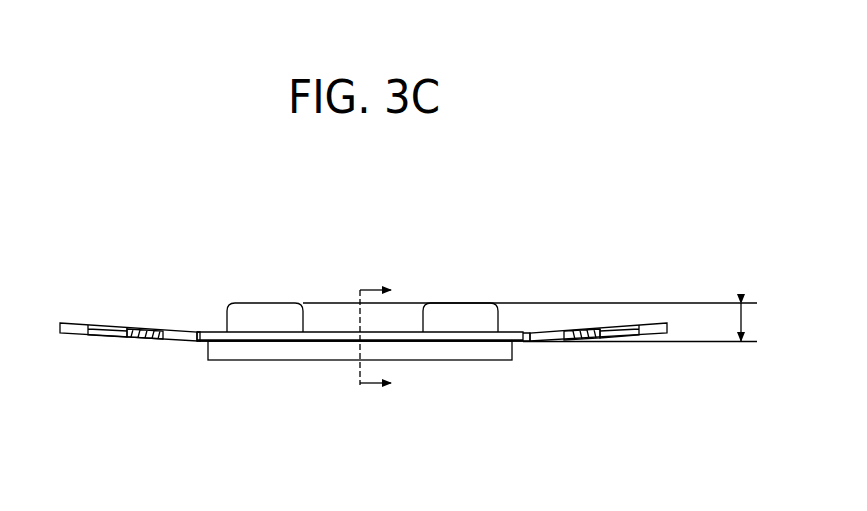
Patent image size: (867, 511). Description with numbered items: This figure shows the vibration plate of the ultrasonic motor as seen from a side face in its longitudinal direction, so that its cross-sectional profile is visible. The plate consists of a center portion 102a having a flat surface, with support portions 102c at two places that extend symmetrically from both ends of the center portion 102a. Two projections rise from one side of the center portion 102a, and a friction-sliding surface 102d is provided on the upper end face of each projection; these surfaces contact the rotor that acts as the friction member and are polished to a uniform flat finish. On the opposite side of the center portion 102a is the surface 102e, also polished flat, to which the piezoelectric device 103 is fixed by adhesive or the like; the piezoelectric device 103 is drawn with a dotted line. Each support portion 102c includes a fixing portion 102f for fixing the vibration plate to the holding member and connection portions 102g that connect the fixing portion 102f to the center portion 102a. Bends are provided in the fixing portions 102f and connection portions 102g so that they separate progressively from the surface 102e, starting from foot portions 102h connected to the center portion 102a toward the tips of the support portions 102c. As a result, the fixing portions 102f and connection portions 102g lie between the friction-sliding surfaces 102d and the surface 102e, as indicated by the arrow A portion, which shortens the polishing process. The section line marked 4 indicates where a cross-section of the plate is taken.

The center portion 102a is at (320, 332).
The support portion 102c is at (187, 258).
The friction-sliding surface 102d is at (258, 302).
The surface 102e is at (416, 342).
The fixing portion 102f is at (98, 325).
The connection portion 102g is at (165, 332).
The foot portion 102h is at (195, 343).
The piezoelectric device 103 is at (277, 353).
The section line 4- 4 is at (383, 340).
The arrow A portion A is at (729, 322).